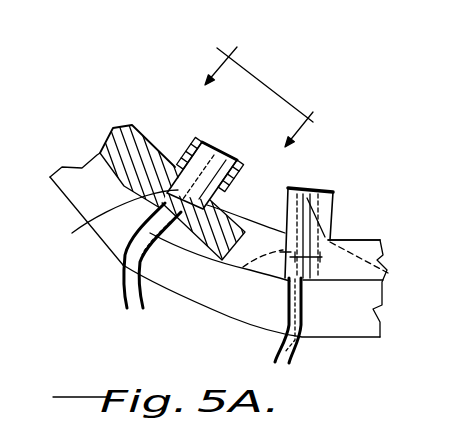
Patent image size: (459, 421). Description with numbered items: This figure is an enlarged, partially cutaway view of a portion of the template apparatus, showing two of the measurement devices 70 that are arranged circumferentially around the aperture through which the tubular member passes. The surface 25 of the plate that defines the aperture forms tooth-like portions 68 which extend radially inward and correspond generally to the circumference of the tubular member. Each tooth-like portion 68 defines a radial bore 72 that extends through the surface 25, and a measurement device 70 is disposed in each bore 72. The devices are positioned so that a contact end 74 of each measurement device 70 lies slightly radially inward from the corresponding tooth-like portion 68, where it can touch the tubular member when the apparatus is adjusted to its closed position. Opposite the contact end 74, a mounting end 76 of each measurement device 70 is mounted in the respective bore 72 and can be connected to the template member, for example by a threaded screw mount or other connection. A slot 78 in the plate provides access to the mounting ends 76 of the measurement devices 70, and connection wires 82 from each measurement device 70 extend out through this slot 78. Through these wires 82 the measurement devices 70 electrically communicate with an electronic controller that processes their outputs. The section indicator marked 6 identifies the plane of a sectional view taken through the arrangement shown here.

The section line 6- 6 is at (271, 84).
The surface 25 is at (360, 237).
The tooth-like portion 68 is at (234, 169).
The measurement device 70 is at (248, 152).
The radial bore 72 is at (176, 166).
The contact end 74 is at (193, 152).
The mounting end 76 is at (243, 267).
The slot 78 is at (98, 185).
The connection wires 82 is at (137, 293).